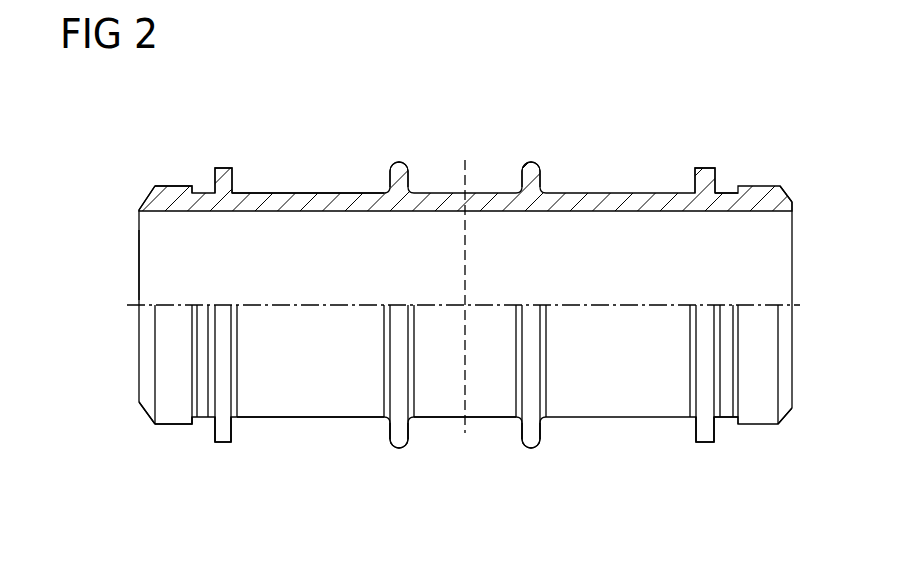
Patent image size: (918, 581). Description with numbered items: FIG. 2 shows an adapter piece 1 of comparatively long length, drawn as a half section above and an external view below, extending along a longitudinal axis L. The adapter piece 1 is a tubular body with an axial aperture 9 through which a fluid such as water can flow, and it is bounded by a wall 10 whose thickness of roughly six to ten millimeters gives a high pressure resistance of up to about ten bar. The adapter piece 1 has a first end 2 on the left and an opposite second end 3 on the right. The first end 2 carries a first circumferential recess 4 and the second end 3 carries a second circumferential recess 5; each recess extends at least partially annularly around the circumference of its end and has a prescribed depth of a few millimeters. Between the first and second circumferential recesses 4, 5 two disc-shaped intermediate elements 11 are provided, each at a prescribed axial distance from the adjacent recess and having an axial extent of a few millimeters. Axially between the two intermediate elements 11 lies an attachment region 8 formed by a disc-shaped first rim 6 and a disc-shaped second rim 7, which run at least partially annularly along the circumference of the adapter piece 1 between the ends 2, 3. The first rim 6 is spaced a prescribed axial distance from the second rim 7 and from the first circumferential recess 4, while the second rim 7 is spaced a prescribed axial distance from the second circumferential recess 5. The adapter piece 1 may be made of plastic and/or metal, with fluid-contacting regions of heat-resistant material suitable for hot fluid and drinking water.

The adapter piece 1 is at (467, 111).
The first end 2 is at (141, 441).
The second end 3 is at (798, 478).
The first circumferential recess 4 is at (202, 192).
The second circumferential recess 5 is at (722, 427).
The first rim 6 is at (397, 177).
The second rim 7 is at (525, 177).
The attachment region 8 is at (385, 460).
The axial aperture 9 is at (60, 270).
The wall 10 is at (295, 194).
The intermediate element 11 is at (220, 168).
The longitudinal axis L is at (795, 306).